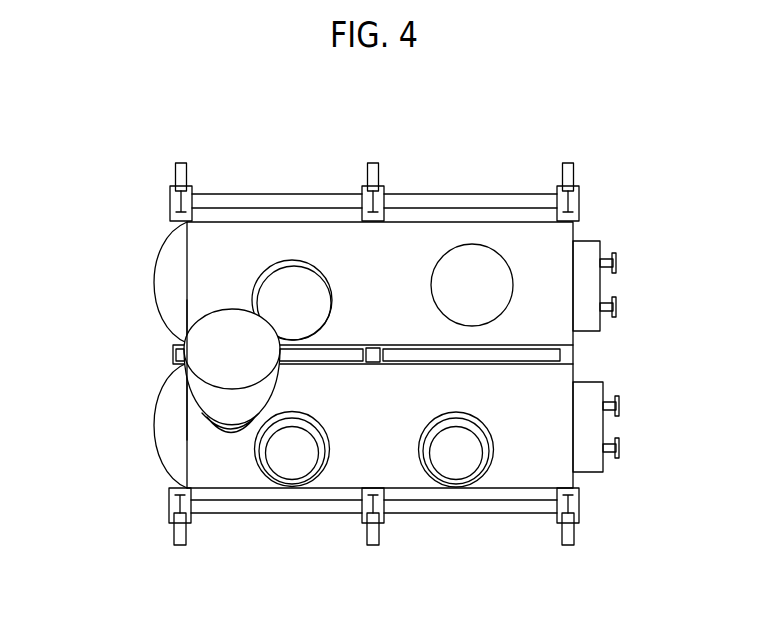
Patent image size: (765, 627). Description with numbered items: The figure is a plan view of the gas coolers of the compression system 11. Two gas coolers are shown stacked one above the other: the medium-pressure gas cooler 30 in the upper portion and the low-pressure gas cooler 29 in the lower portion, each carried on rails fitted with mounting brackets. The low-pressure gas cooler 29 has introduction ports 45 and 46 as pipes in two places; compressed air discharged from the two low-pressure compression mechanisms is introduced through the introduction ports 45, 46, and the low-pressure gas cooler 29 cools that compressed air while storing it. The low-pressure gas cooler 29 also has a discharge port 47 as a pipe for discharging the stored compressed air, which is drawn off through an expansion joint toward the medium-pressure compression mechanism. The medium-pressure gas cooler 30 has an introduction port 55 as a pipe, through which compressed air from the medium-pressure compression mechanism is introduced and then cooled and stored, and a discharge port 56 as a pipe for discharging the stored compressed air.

The compression system 11 is at (660, 150).
The medium-pressure gas cooler 30 is at (165, 283).
The low-pressure gas cooler 29 is at (167, 445).
The introduction port 55 is at (291, 258).
The discharge port 56 is at (470, 244).
The introduction port 45 is at (253, 462).
The introduction port 46 is at (419, 463).
The discharge port 47 is at (208, 427).